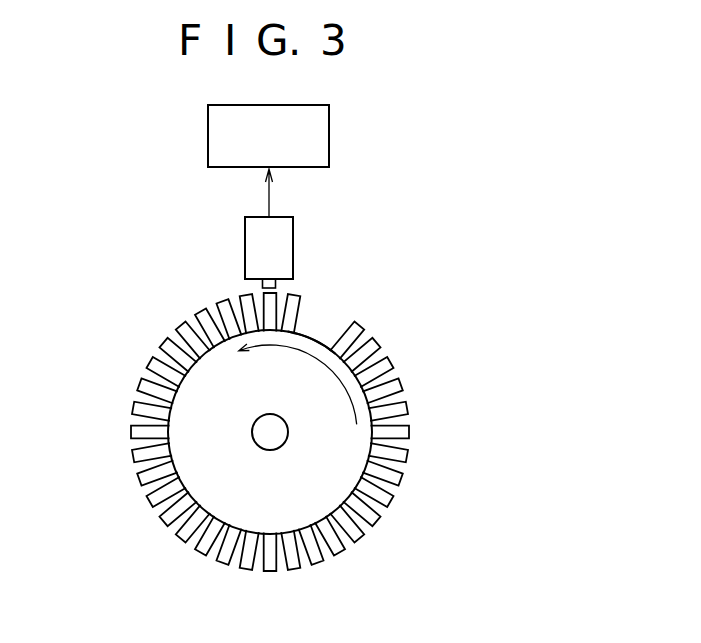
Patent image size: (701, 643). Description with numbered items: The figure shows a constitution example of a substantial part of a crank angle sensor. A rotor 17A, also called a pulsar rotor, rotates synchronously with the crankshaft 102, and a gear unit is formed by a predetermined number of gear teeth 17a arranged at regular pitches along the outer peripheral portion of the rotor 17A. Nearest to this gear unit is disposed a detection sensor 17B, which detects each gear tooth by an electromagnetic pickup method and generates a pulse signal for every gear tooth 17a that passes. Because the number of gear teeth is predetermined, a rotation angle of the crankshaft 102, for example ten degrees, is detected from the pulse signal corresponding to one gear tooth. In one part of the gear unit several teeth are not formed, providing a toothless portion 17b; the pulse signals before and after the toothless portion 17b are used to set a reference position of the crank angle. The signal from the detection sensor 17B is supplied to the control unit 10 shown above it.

The ECU (electronic control unit) 10 is at (243, 103).
The detection sensor 17B is at (245, 250).
The rotor 17A is at (210, 502).
The gear teeth 17a is at (372, 340).
The toothless portion 17b is at (327, 313).
The crankshaft 102 is at (270, 450).